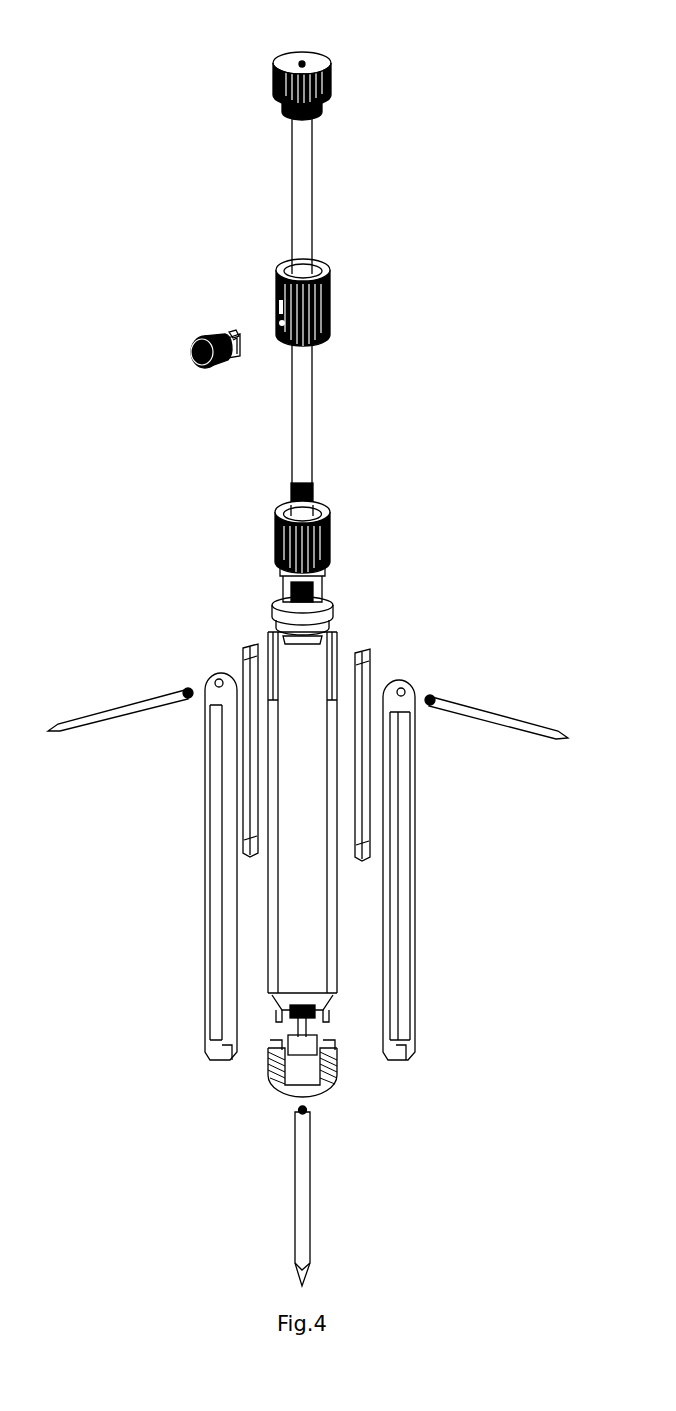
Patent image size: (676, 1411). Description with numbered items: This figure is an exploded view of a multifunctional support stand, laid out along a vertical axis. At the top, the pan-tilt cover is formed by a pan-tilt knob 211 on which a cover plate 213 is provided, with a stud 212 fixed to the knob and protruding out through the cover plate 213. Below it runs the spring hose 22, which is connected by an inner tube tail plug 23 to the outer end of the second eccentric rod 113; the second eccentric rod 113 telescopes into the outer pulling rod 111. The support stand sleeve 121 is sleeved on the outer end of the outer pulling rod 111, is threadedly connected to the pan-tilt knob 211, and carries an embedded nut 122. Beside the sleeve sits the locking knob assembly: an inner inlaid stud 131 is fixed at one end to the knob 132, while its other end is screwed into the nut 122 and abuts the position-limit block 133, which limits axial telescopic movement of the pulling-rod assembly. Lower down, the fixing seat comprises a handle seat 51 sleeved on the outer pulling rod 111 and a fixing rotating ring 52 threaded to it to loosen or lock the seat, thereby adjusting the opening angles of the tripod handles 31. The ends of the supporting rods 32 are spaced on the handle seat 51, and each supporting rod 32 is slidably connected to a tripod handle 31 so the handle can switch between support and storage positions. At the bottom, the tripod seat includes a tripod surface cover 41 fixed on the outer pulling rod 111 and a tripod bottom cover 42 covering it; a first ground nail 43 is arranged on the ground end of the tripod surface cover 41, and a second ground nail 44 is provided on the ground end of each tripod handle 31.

The pan-tilt knob 211 is at (330, 80).
The stud 212 is at (303, 60).
The cover plate 213 is at (318, 60).
The spring hose 22 is at (309, 186).
The support stand sleeve 121 is at (330, 286).
The nut 122 is at (283, 335).
The inner inlaid stud 131 is at (236, 356).
The knob 132 is at (206, 336).
The position-limit block 133 is at (234, 330).
The second eccentric rod 113 is at (309, 413).
The inner tube tail plug 23 is at (314, 492).
The fixing rotating ring 52 is at (330, 538).
The handle seat 51 is at (333, 614).
The outer pulling rod 111 is at (320, 662).
The supporting rod 32 is at (368, 676).
The tripod handle 31 is at (408, 888).
The second ground nail 44 is at (478, 712).
The tripod surface cover 41 is at (325, 1005).
The tripod bottom cover 42 is at (337, 1078).
The first ground nail 43 is at (312, 1148).